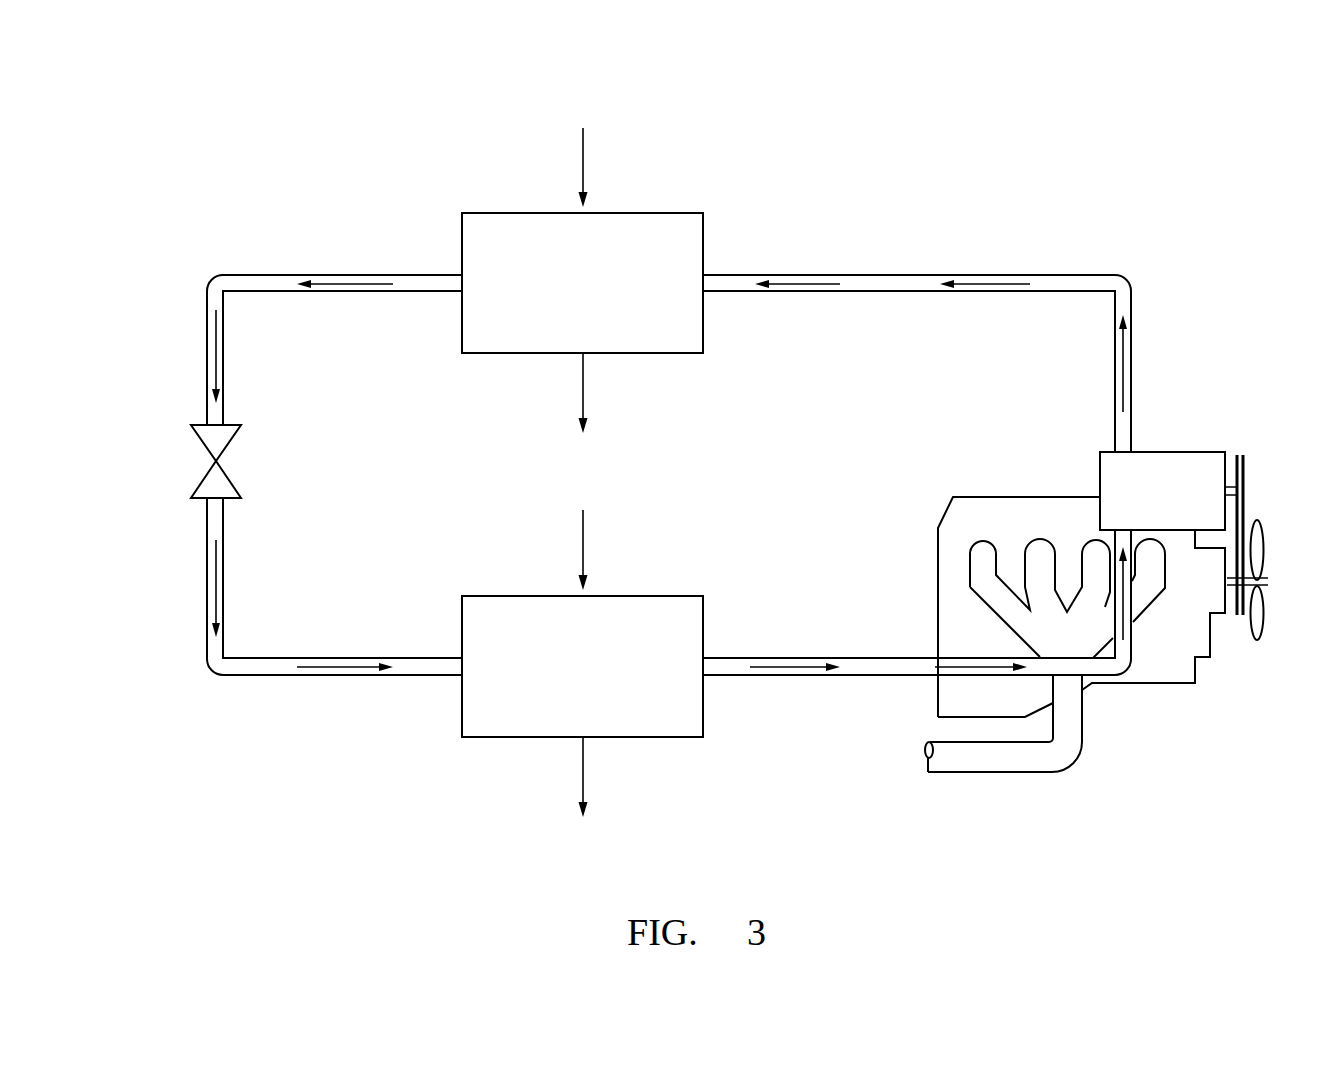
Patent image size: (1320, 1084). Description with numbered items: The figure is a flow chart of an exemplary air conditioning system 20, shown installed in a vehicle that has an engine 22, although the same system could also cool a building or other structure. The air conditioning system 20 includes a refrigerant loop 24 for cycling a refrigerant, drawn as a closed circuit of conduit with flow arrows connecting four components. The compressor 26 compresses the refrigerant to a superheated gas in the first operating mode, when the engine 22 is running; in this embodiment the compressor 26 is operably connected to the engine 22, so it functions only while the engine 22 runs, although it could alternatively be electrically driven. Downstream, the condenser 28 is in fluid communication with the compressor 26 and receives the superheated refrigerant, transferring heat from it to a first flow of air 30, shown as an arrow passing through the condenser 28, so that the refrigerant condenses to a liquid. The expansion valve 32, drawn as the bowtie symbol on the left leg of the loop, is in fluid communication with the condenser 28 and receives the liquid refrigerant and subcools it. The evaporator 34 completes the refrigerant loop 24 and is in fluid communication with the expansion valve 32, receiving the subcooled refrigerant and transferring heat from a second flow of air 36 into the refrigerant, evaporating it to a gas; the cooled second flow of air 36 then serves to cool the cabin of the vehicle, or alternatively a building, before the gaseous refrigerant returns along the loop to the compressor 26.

The air conditioning system 20 is at (1140, 226).
The engine 22 is at (987, 507).
The refrigerant loop 24 is at (1137, 343).
The compressor 26 is at (1187, 452).
The condenser 28 is at (648, 213).
The first flow of air 30 is at (583, 147).
The expansion valve 32 is at (203, 425).
The evaporator 34 is at (648, 596).
The second flow of air 36 is at (583, 527).